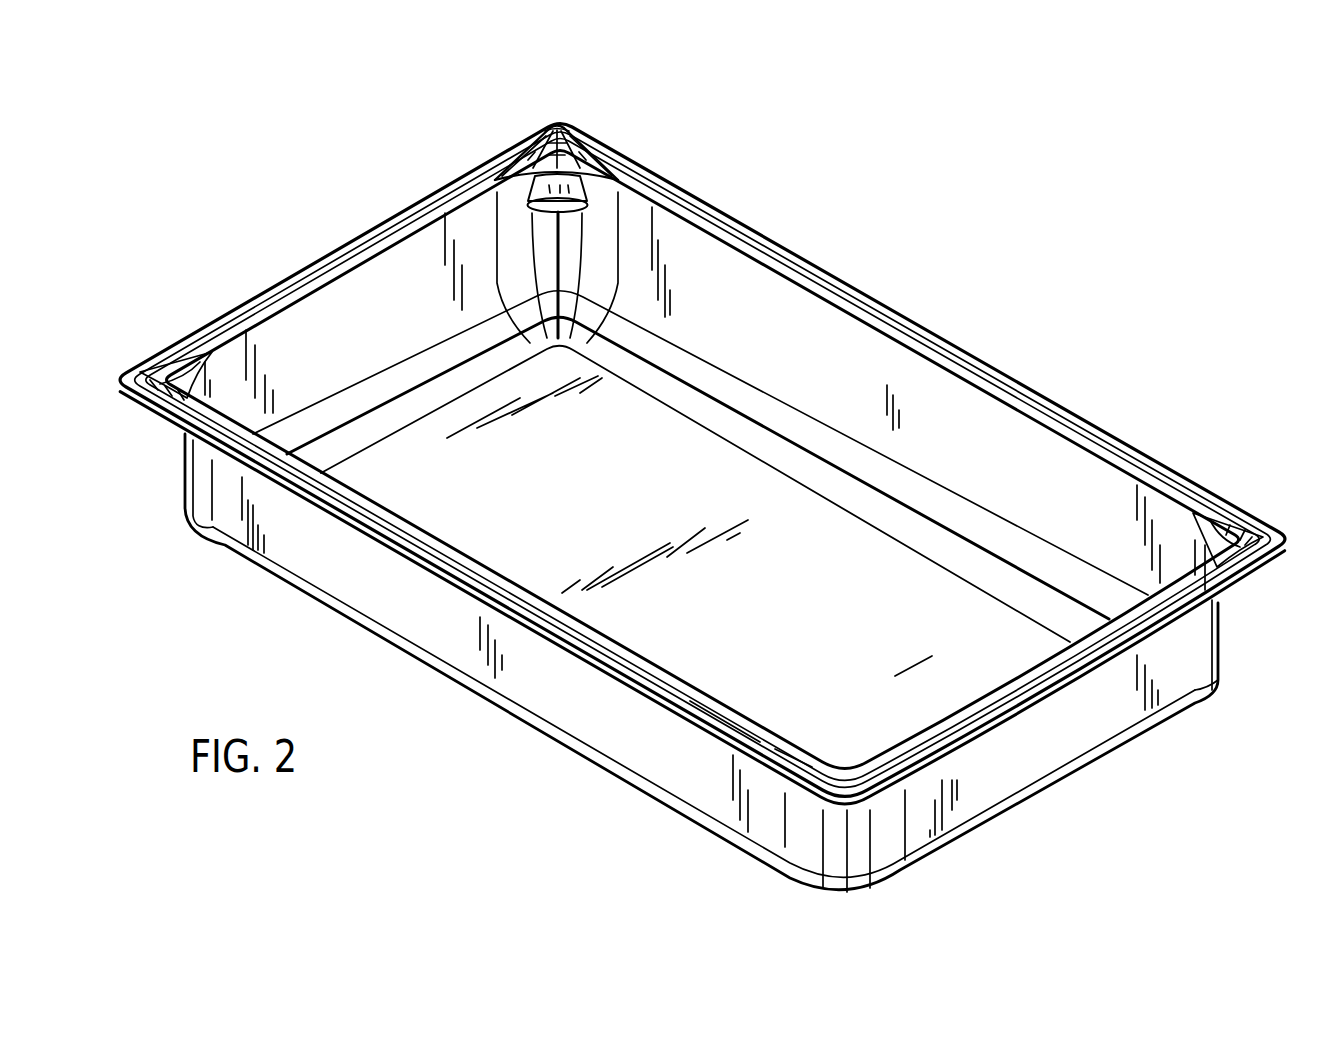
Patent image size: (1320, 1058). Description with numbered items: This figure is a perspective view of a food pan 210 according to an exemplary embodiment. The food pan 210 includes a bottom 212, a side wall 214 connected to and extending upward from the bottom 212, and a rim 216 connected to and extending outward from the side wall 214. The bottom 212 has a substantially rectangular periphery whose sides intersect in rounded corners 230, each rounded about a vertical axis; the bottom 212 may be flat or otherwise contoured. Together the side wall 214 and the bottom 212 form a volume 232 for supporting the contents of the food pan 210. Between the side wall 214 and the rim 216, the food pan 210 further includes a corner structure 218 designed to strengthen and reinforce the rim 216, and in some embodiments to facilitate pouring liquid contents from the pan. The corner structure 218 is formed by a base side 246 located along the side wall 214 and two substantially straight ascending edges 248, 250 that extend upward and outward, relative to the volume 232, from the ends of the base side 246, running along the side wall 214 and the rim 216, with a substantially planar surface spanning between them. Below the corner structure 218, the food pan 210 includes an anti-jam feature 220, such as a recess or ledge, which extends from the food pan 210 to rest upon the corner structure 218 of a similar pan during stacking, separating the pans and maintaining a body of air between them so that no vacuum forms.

The food pan 210 is at (1002, 254).
The bottom 212 is at (809, 627).
The side wall 214 is at (369, 340).
The rim 216 is at (1075, 422).
The corner structure 218 is at (589, 121).
The anti-jam feature 220 is at (528, 200).
The rounded corner 230 is at (563, 254).
The volume 232 is at (419, 367).
The base side 246 is at (548, 150).
The ascending edge 248 is at (510, 150).
The ascending edge 250 is at (606, 161).